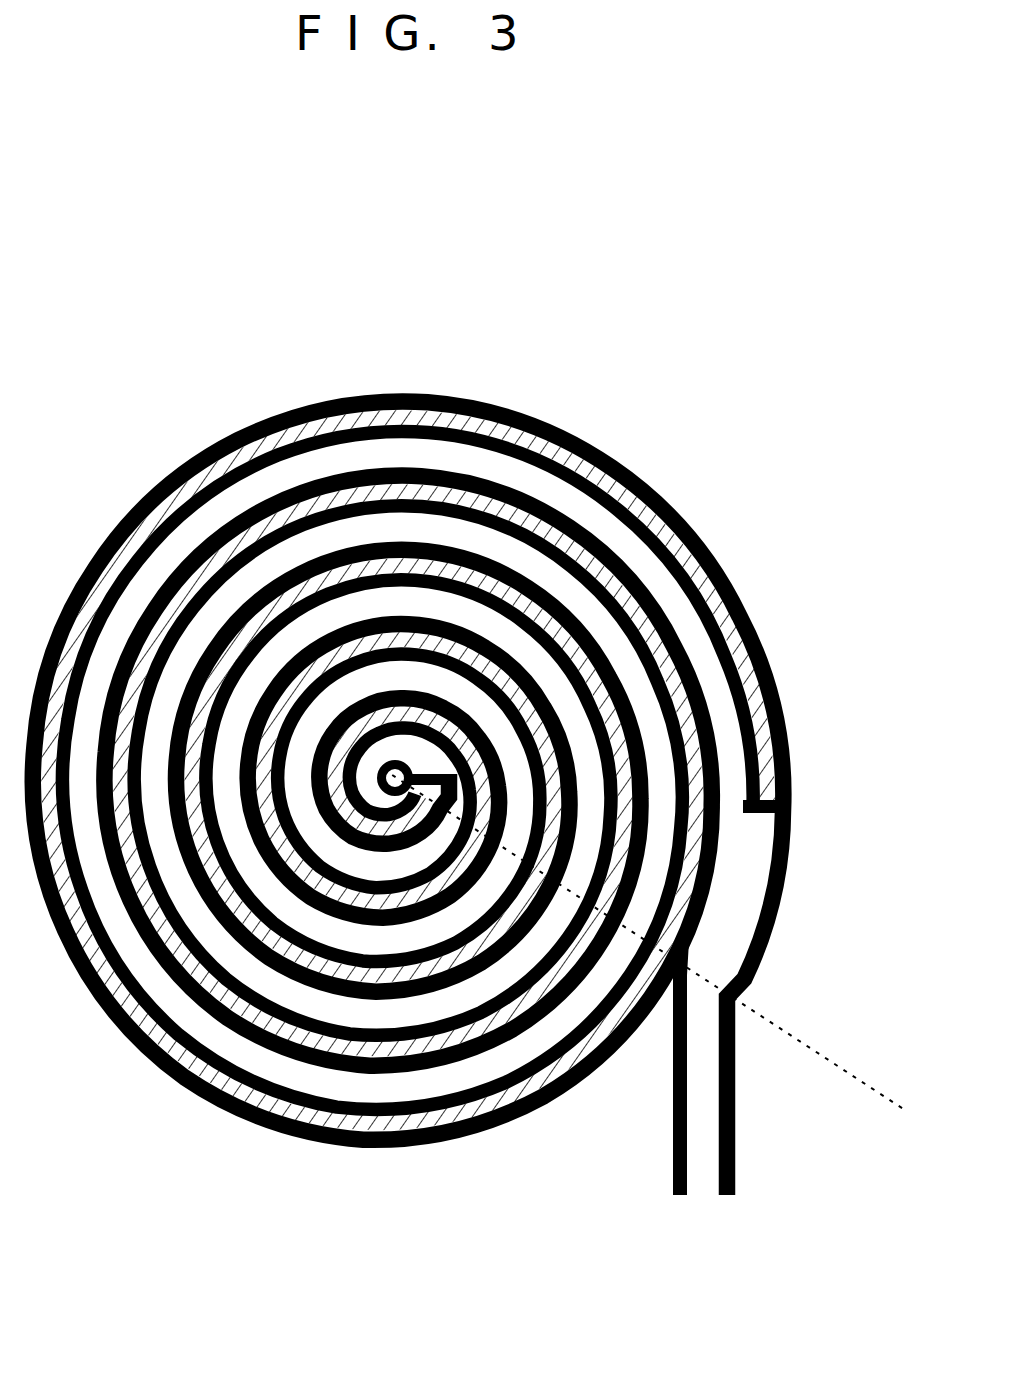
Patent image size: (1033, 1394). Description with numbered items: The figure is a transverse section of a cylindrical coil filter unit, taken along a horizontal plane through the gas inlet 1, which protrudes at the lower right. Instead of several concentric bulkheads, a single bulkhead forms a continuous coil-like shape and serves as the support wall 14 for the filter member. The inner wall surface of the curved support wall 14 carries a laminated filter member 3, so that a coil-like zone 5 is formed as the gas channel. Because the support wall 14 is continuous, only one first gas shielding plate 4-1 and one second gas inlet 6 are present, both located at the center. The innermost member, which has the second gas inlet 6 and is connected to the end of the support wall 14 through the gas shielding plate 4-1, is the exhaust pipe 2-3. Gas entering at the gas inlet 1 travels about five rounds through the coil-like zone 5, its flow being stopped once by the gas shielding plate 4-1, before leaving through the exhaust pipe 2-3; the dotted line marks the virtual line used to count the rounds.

The gas inlet 1 is at (707, 1198).
The exhaust pipe 2-3 is at (381, 752).
The filter member 3 is at (498, 458).
The first gas shielding plate 4-1 is at (641, 678).
The coil-like zone 5 is at (232, 1038).
The second gas inlet 6 is at (411, 793).
The support wall 14 is at (666, 498).